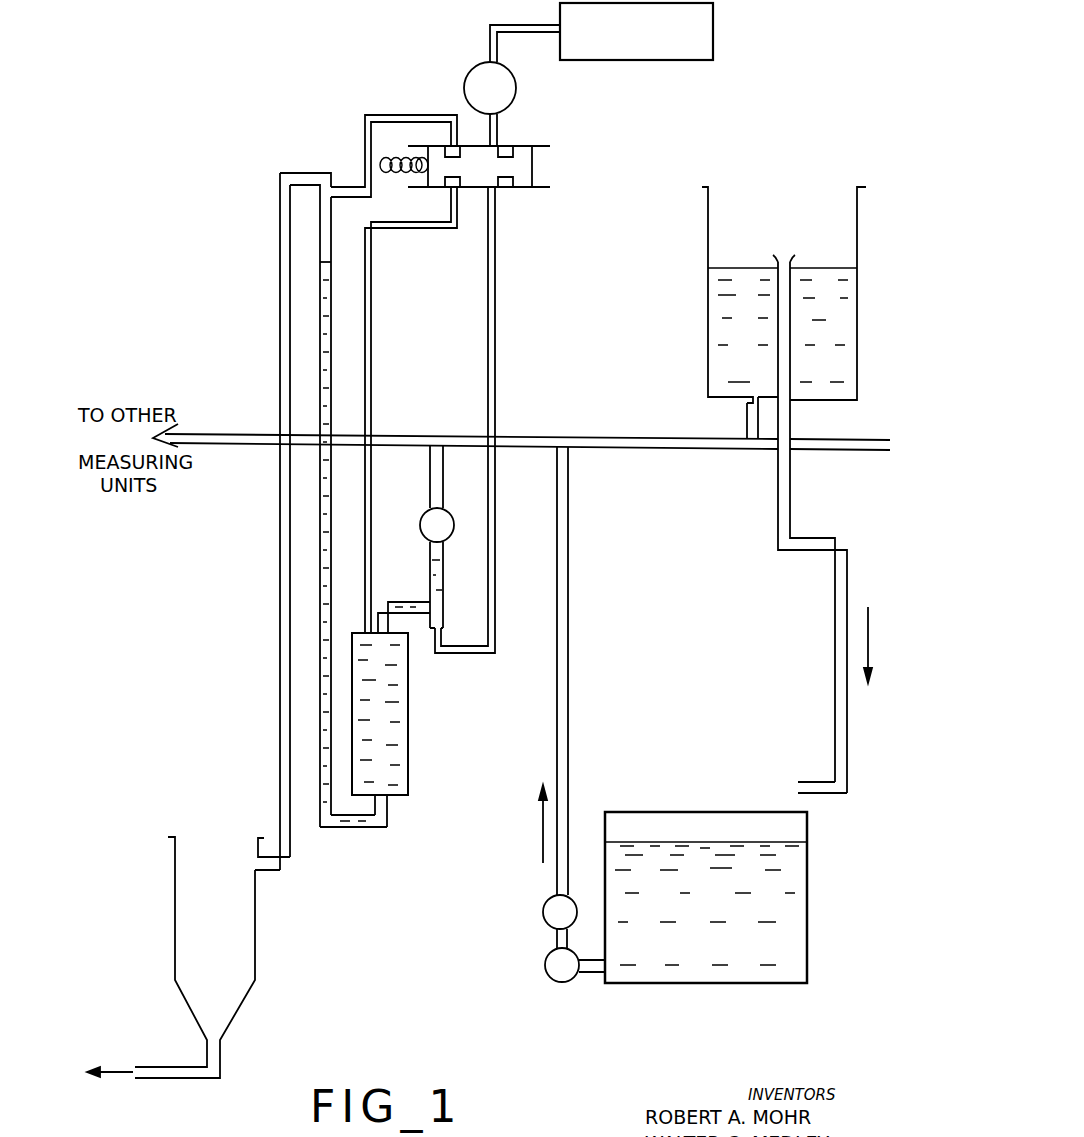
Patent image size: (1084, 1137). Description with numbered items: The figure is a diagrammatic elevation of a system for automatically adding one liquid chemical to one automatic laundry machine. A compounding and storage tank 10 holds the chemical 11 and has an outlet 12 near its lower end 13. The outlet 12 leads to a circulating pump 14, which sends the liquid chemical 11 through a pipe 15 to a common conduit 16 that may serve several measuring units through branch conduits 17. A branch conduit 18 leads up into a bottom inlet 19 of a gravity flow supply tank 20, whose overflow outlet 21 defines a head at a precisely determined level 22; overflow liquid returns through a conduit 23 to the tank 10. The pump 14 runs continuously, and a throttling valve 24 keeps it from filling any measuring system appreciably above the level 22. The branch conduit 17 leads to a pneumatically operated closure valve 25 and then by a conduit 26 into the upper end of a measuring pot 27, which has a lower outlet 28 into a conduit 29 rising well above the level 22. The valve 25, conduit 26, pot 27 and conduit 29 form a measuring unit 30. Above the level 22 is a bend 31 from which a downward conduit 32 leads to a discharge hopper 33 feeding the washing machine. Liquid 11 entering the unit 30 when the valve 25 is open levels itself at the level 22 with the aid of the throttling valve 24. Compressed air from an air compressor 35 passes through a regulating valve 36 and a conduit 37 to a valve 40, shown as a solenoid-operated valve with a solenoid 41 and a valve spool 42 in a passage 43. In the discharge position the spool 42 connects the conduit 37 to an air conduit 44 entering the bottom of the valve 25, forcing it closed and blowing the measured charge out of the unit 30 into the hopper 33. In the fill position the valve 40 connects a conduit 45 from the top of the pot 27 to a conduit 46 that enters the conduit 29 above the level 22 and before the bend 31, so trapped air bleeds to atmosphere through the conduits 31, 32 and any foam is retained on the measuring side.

The compounding and storage tank 10 is at (696, 882).
The chemical 11 is at (615, 847).
The outlet 12 is at (603, 975).
The lower end 13 is at (700, 983).
The circulating pump 14 is at (550, 981).
The pipe 15 is at (570, 684).
The common conduit 16 is at (220, 445).
The branch conduit 17 is at (430, 473).
The branch conduit 18 is at (747, 425).
The bottom inlet 19 is at (752, 399).
The gravity flow supply tank 20 is at (707, 292).
The overflow outlet 21 is at (786, 260).
The level 22 is at (328, 262).
The conduit 23 is at (835, 622).
The throttling valve 24 is at (545, 922).
The pneumatically operated closure valve 25 is at (420, 524).
The conduit 26 is at (403, 601).
The measuring pot 27 is at (400, 737).
The lower outlet 28 is at (380, 794).
The conduit 29 is at (315, 815).
The measuring unit 30 is at (390, 828).
The bend 31 is at (303, 173).
The conduit 32 is at (280, 552).
The discharge hopper 33 is at (182, 922).
The air compressor 35 is at (622, 61).
The regulating valve 36 is at (516, 88).
The conduit 37 is at (497, 128).
The valve 40 is at (499, 171).
The solenoid 41 is at (398, 177).
The valve spool 42 is at (487, 178).
The passage 43 is at (508, 147).
The air conduit 44 is at (495, 353).
The conduit 45 is at (372, 337).
The conduit 46 is at (413, 115).